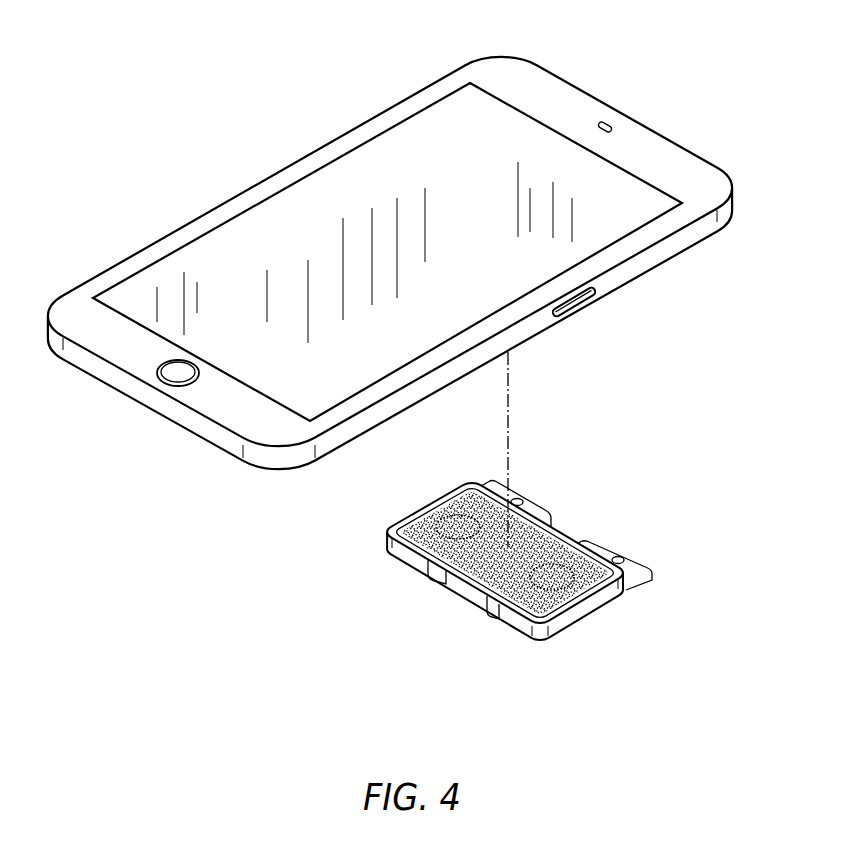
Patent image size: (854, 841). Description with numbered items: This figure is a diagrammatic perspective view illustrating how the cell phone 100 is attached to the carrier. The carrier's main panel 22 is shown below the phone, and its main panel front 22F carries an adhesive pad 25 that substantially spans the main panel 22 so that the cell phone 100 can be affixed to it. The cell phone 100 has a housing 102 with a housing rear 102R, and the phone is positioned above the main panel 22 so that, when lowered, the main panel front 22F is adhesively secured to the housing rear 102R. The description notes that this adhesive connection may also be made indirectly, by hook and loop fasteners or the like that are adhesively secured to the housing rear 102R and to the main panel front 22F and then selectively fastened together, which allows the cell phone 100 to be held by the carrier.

The cell phone 100 is at (394, 243).
The housing 102 is at (290, 168).
The housing rear 102R is at (670, 257).
The main panel 22 is at (519, 544).
The main panel front 22F is at (440, 497).
The adhesive pad 25 is at (553, 531).